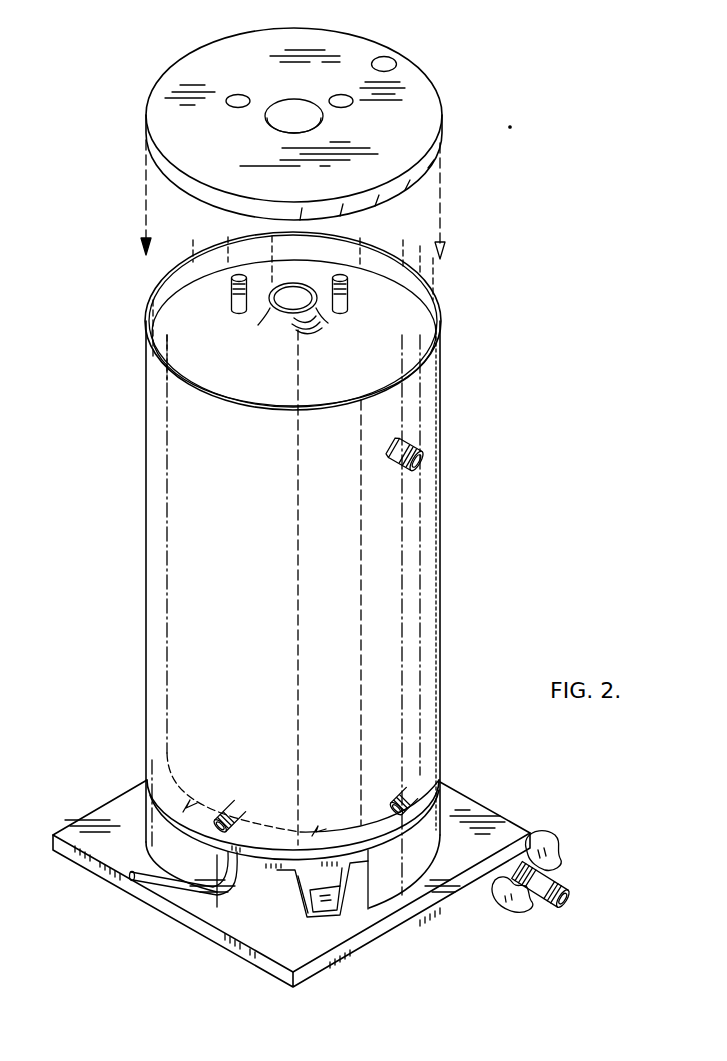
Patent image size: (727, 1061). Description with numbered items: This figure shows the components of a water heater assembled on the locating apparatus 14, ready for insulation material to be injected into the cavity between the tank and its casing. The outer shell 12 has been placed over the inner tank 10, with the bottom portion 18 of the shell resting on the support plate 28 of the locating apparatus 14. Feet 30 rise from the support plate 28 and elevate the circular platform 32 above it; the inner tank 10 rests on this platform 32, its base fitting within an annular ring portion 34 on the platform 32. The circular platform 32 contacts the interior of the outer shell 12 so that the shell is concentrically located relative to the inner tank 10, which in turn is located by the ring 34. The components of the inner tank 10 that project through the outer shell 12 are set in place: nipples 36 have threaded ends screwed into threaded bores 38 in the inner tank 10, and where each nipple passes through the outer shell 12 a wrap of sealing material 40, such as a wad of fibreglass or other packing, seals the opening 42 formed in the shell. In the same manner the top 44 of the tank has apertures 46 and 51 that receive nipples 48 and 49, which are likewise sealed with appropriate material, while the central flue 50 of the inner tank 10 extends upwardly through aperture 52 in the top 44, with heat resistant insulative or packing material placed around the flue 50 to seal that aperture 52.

The inner tank 10 is at (318, 607).
The outer shell 12 is at (450, 530).
The apparatus 14 is at (254, 925).
The bottom portion 18 is at (392, 878).
The support plate 28 is at (482, 813).
The feet 30 is at (345, 900).
The circular platform 32 is at (250, 865).
The annular ring portion 34 is at (153, 746).
The nipples 36 is at (560, 878).
The threaded bores 38 is at (440, 782).
The sealing material 40 is at (547, 840).
The opening 42 is at (388, 808).
The top 44 is at (420, 103).
The aperture 46 is at (237, 95).
The nipple 48 is at (230, 297).
The nipple 49 is at (348, 297).
The central flue 50 is at (295, 276).
The aperture 51 is at (342, 96).
The aperture 52 is at (280, 100).